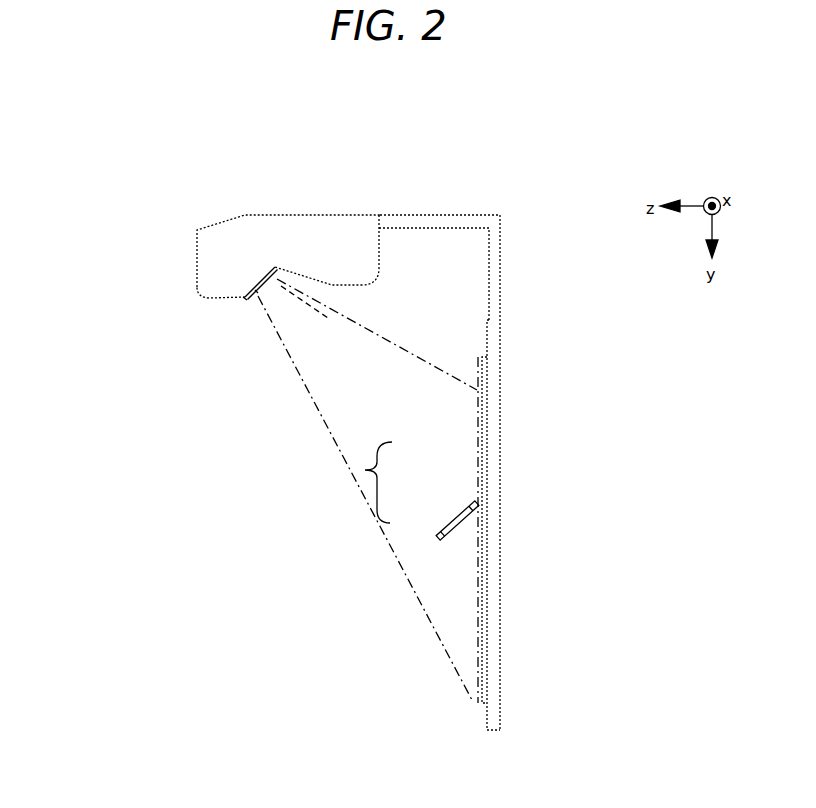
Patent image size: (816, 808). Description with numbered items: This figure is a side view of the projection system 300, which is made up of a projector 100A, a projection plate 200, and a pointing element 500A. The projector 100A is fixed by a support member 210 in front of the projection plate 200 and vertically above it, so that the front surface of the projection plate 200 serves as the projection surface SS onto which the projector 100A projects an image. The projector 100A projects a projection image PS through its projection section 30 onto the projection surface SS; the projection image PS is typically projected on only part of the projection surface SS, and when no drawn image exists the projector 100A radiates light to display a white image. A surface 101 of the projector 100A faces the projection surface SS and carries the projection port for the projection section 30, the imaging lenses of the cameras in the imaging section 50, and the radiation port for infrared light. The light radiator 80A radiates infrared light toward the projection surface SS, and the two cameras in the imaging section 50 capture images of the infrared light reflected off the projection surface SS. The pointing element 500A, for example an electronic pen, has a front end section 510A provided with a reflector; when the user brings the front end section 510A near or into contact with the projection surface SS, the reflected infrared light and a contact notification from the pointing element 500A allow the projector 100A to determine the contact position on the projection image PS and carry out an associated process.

The projection system 300 is at (135, 148).
The projector 100A is at (197, 262).
The surface 101 is at (247, 298).
The projection section 30 is at (256, 291).
The imaging section 50 is at (264, 284).
The light radiator 80A is at (270, 276).
The support member 210 is at (470, 222).
The projection plate 200 is at (495, 340).
The projection surface SS is at (478, 372).
The projection image PS is at (477, 450).
The pointing element 500A is at (411, 478).
The front end section 510A is at (438, 492).